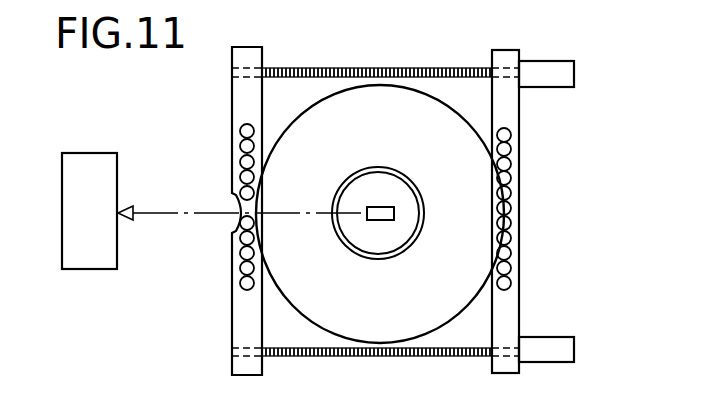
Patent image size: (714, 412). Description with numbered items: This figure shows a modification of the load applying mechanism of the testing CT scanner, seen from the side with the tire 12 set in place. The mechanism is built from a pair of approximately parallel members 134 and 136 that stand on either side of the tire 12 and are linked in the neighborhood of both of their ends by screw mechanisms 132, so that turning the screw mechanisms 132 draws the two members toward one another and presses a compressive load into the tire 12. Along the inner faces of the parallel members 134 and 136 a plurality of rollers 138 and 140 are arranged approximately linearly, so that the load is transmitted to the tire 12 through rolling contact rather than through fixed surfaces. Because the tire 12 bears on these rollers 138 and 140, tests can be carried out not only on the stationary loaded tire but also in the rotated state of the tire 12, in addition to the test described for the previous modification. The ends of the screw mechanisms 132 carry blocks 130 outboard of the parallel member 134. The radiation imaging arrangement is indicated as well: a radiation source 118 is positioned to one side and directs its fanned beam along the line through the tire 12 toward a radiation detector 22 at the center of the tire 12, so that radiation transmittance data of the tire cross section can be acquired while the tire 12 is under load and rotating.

The tire 12 is at (480, 227).
The radiation detector 22 is at (390, 208).
The radiation source 118 is at (65, 212).
The mounting block 130 is at (570, 75).
The screw mechanisms 132 is at (398, 68).
The parallel member 134 is at (497, 363).
The parallel member 136 is at (243, 368).
The rollers 138 is at (245, 284).
The rollers 140 is at (506, 285).